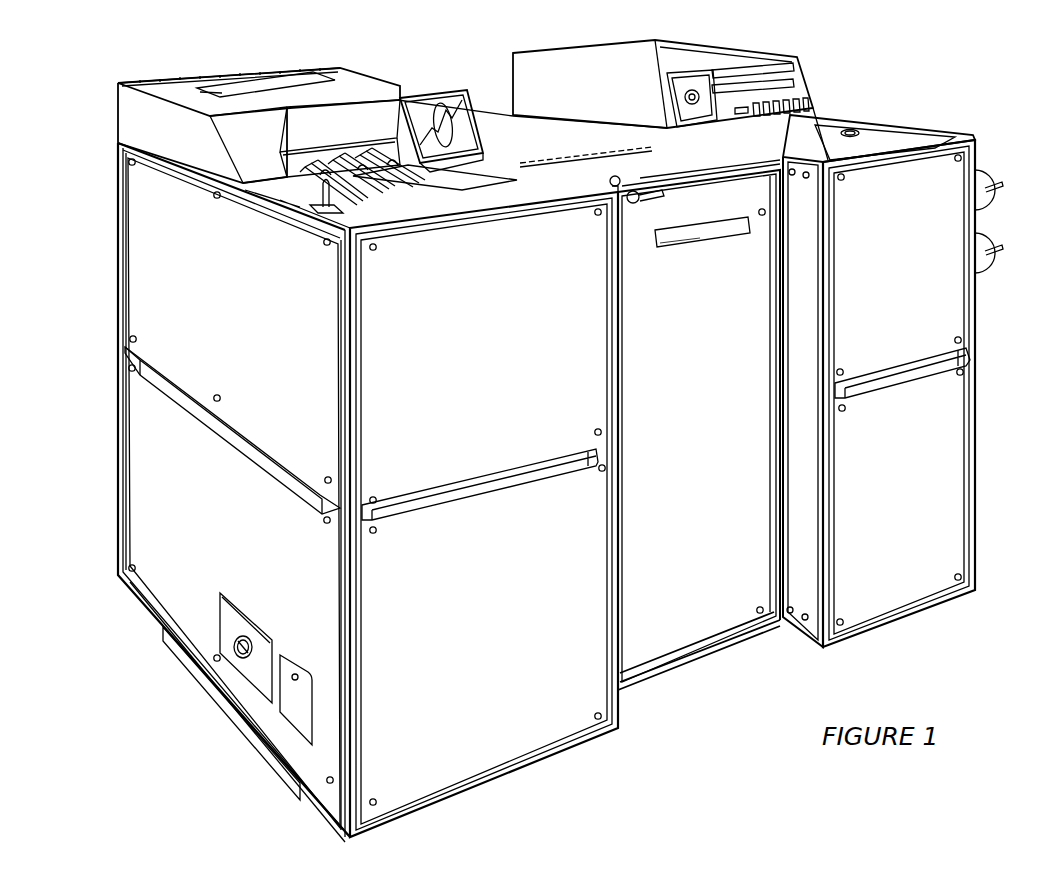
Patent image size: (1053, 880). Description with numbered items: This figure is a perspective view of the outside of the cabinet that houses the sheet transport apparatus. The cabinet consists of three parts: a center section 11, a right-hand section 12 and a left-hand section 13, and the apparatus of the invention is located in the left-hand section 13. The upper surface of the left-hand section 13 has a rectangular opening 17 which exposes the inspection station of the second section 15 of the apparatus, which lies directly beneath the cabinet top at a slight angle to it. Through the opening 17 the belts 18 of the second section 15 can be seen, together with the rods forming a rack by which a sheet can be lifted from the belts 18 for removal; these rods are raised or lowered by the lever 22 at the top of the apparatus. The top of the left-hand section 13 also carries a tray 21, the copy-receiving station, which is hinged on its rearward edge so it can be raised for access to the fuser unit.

The center section 11 is at (712, 613).
The right-hand section 12 is at (940, 498).
The left-hand section 13 is at (160, 460).
The second section 15 is at (380, 145).
The rectangular opening 17 is at (460, 182).
The belts 18 is at (345, 200).
The tray 21 is at (347, 120).
The lever 22 is at (318, 200).